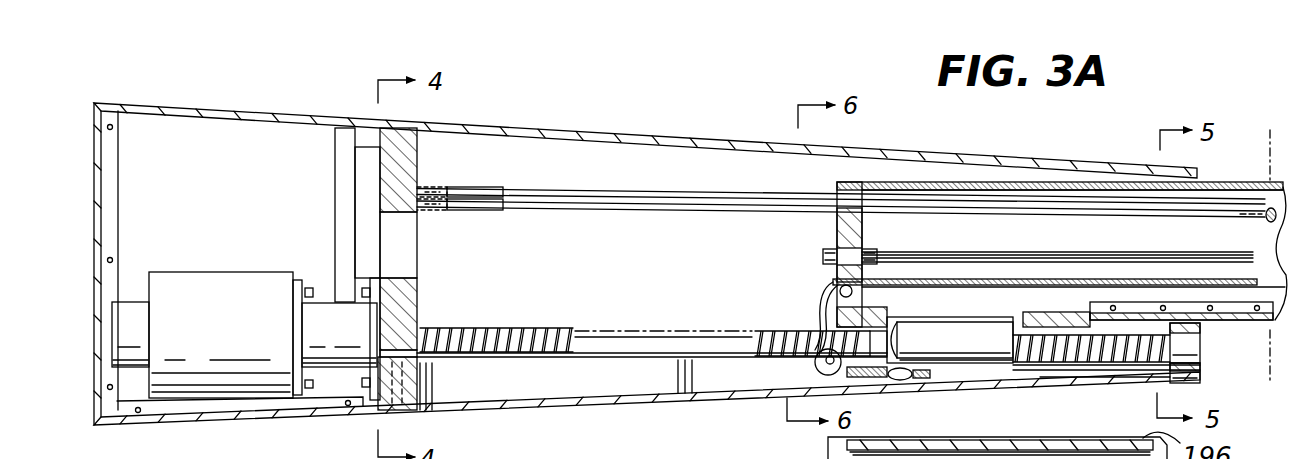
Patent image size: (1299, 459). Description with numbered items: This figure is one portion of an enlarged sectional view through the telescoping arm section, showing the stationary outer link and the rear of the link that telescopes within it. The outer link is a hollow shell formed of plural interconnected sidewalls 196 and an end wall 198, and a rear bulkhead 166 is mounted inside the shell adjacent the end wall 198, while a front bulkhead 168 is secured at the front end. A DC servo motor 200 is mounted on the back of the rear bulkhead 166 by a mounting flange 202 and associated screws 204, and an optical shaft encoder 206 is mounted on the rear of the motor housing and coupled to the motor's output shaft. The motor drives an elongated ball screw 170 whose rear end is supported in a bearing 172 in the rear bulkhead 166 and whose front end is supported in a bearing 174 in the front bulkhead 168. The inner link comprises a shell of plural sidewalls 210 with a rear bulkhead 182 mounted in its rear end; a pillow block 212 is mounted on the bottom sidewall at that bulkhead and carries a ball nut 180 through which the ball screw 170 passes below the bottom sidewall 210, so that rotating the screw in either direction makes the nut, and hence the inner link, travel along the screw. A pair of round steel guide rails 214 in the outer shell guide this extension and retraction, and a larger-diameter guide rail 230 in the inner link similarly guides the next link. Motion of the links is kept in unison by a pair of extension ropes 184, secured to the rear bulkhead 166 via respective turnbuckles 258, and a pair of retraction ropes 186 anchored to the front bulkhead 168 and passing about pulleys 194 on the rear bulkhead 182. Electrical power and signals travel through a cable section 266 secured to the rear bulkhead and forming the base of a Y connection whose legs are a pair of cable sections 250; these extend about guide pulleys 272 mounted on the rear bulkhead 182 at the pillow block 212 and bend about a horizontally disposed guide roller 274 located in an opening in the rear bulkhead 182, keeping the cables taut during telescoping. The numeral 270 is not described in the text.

The rear bulkhead 166 is at (417, 122).
The front bulkhead 168 is at (1193, 368).
The ball screw 170 is at (492, 337).
The bearing 172 is at (418, 360).
The bearing 174 is at (1187, 347).
The ball nut 180 is at (995, 358).
The rear bulkhead 182 is at (837, 233).
The extension ropes 184 is at (593, 189).
The retraction ropes 186 is at (907, 254).
The pulleys 194 is at (823, 256).
The sidewalls 196 is at (223, 426).
The end wall 198 is at (93, 291).
The DC servo motor 200 is at (250, 332).
The mounting flange 202 is at (374, 312).
The screws 204 is at (374, 282).
The optical shaft encoder 206 is at (138, 313).
The sidewalls 210 is at (913, 182).
The pillow block 212 is at (1042, 316).
The guide rails 214 is at (660, 350).
The guide rail 230 is at (1258, 207).
The cable sections 250 is at (900, 330).
The turnbuckles 258 is at (466, 188).
The cable section 266 is at (927, 380).
The screw section 270 is at (1068, 367).
The guide pulleys 272 is at (814, 372).
The guide roller 274 is at (833, 284).